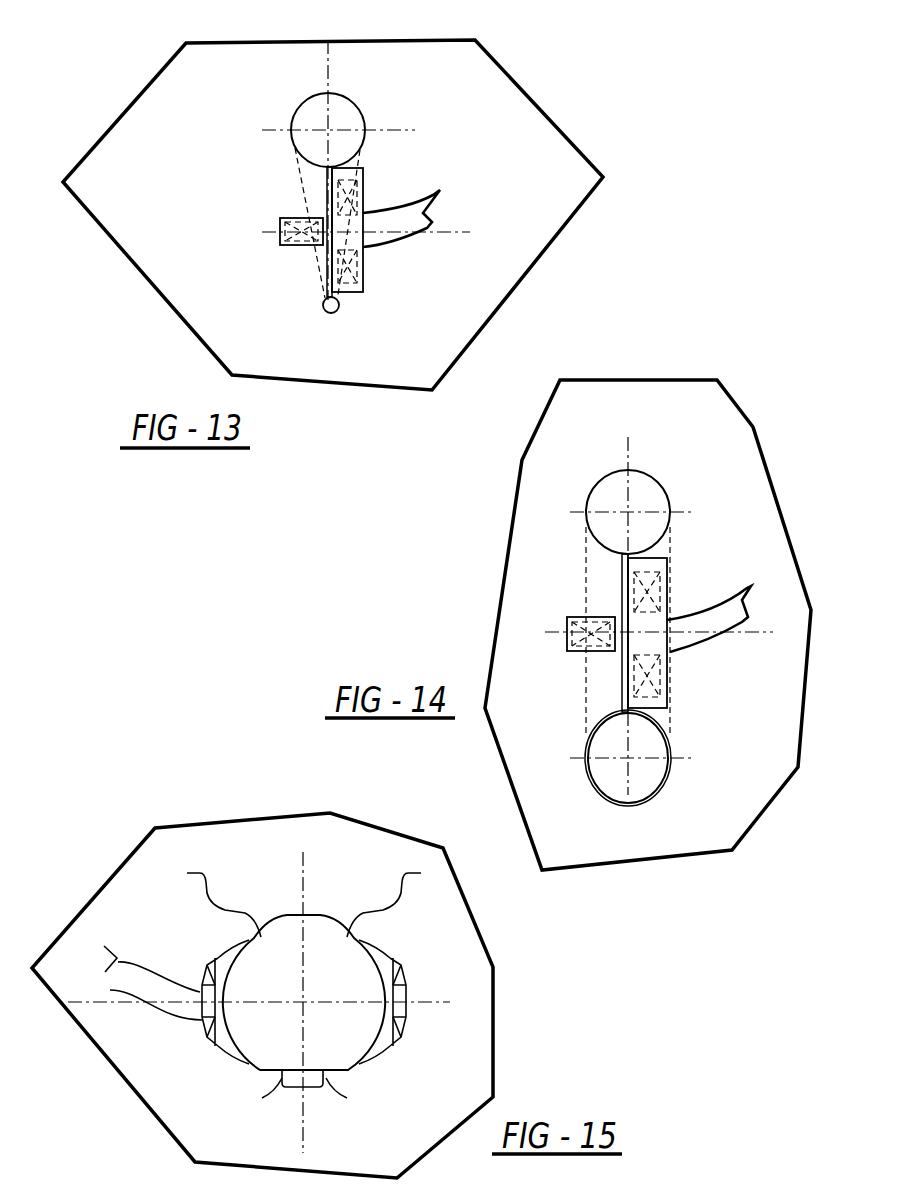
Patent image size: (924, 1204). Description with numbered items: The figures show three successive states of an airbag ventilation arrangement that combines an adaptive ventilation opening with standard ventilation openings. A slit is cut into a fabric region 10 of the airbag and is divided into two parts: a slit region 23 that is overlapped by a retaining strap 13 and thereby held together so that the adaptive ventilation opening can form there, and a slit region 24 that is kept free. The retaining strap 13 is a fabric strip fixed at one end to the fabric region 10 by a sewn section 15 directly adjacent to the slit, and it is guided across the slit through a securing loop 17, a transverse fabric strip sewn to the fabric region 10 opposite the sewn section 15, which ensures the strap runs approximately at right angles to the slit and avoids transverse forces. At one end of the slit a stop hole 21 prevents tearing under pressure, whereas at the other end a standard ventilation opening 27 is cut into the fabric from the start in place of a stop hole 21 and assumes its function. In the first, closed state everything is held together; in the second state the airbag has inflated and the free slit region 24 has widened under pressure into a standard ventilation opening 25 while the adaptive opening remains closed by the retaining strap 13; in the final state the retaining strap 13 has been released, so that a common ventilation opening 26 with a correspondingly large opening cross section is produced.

In FIG. 13, the fabric region 10 is at (495, 128).
In FIG. 13, the retaining strap 13 is at (425, 213).
In FIG. 14, the retaining strap 13 is at (725, 613).
In FIG. 15, the retaining strap 13 is at (140, 978).
In FIG. 13, the sewn section 15 is at (280, 225).
In FIG. 14, the sewn section 15 is at (567, 627).
In FIG. 13, the securing loop 17 is at (363, 265).
In FIG. 14, the securing loop 17 is at (670, 677).
In FIG. 13, the stop hole 21 is at (326, 312).
In FIG. 14, the stop hole 21 is at (633, 810).
In FIG. 13, the slit region 23 is at (325, 250).
In FIG. 14, the slit region 23 is at (665, 572).
In FIG. 13, the slit region 24 is at (327, 272).
In FIG. 14, the standard ventilation opening 25 is at (648, 780).
In FIG. 15, the common ventilation opening 26 is at (352, 1035).
In FIG. 13, the standard ventilation opening 27 is at (340, 108).
In FIG. 14, the standard ventilation opening 27 is at (644, 495).